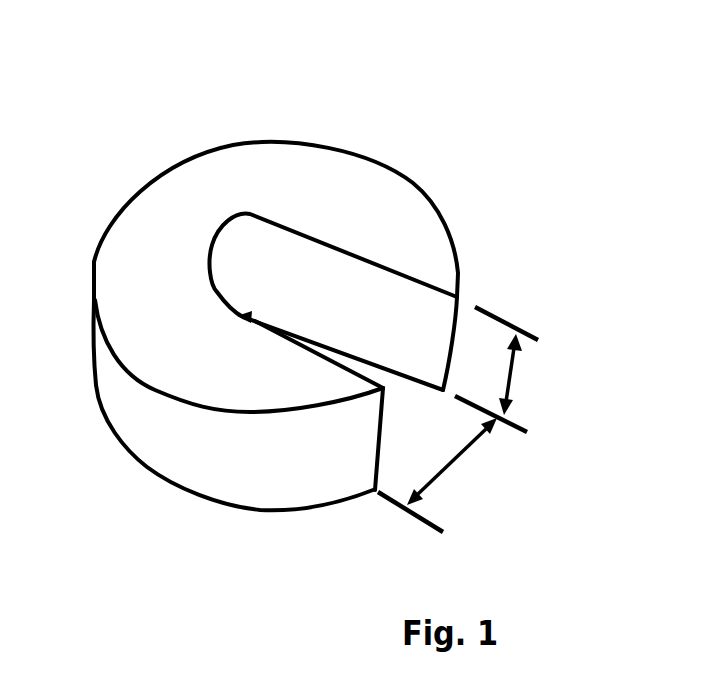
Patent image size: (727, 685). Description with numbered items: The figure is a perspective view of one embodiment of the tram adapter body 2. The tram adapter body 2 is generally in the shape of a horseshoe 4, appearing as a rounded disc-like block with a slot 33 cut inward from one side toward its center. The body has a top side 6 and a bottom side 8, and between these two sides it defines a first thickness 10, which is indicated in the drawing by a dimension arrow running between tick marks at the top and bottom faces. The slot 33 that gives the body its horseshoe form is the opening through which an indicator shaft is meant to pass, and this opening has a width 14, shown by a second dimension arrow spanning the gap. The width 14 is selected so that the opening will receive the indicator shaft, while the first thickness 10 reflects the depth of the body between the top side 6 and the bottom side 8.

The tram adapter body 2 is at (234, 145).
The horseshoe 4 is at (395, 200).
The top side 6 is at (187, 355).
The bottom side 8 is at (237, 508).
The slot 33 is at (265, 242).
The first thickness 10 is at (515, 370).
The width 14 is at (458, 460).